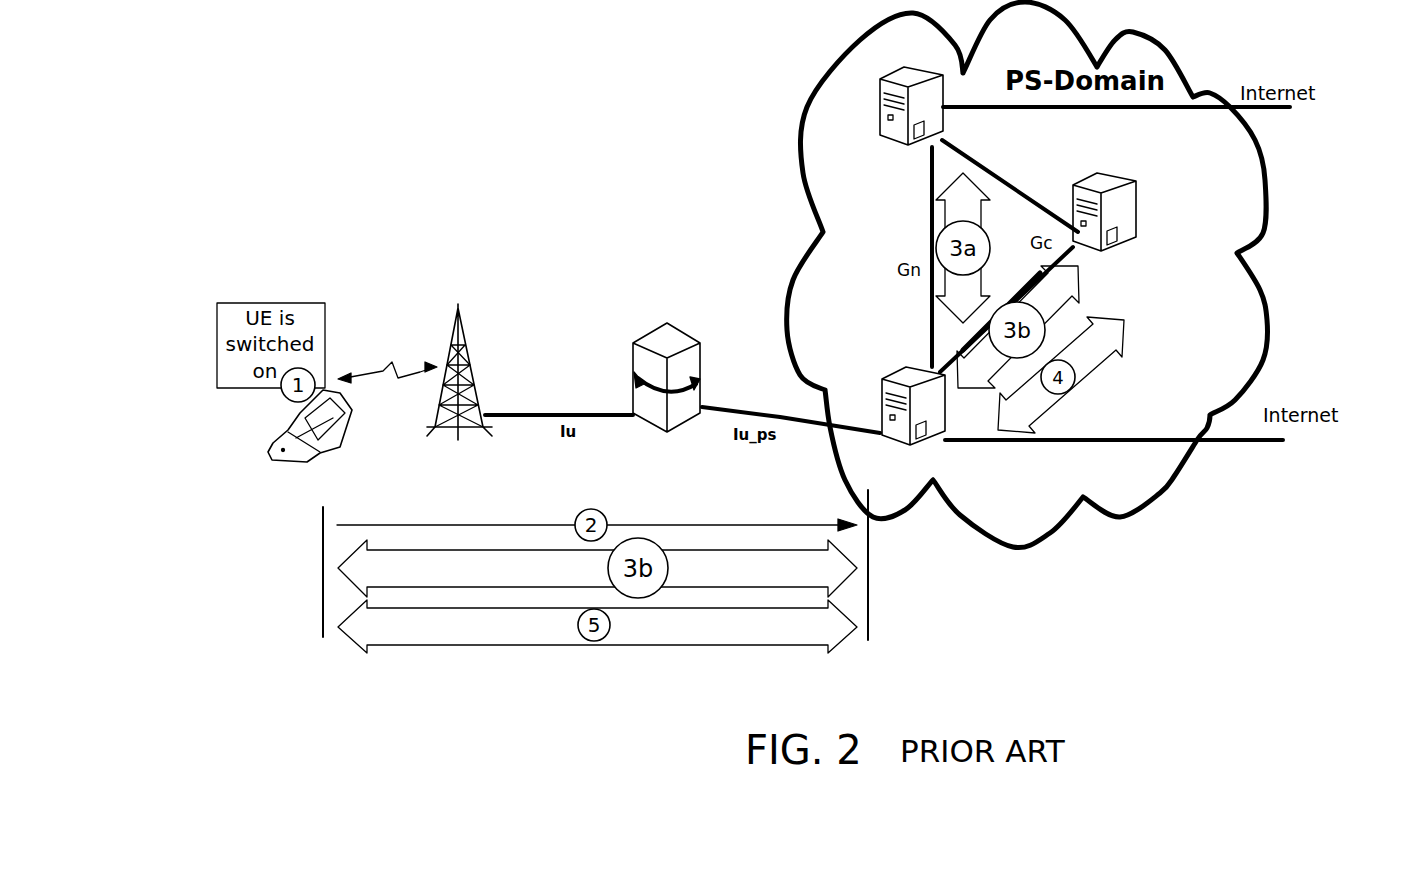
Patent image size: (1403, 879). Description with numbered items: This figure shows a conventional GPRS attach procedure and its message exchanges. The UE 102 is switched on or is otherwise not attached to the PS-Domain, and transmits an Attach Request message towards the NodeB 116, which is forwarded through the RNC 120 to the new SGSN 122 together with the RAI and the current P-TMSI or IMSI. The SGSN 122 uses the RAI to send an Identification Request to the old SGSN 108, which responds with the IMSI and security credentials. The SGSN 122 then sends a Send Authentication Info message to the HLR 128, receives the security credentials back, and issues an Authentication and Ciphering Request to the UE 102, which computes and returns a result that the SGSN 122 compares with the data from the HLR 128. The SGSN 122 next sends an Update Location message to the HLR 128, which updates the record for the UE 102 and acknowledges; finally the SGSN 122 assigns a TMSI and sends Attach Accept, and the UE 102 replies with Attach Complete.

The UE 102 is at (268, 473).
The SGSN 108 is at (907, 90).
The NodeB 116 is at (463, 343).
The RNC 120 is at (670, 330).
The SGSN 122 is at (887, 387).
The HLR 128 is at (1110, 183).